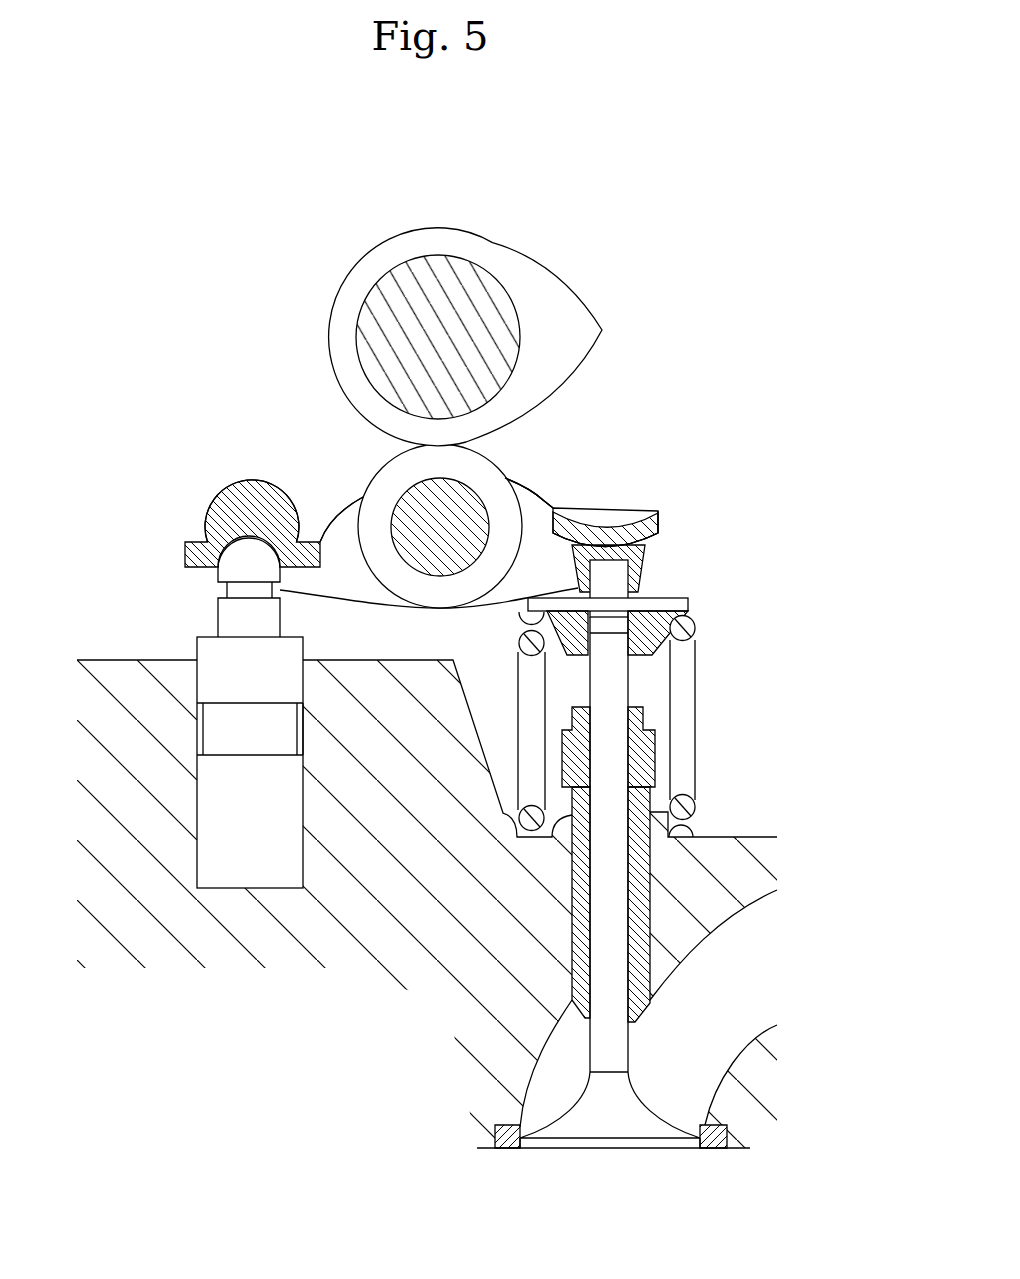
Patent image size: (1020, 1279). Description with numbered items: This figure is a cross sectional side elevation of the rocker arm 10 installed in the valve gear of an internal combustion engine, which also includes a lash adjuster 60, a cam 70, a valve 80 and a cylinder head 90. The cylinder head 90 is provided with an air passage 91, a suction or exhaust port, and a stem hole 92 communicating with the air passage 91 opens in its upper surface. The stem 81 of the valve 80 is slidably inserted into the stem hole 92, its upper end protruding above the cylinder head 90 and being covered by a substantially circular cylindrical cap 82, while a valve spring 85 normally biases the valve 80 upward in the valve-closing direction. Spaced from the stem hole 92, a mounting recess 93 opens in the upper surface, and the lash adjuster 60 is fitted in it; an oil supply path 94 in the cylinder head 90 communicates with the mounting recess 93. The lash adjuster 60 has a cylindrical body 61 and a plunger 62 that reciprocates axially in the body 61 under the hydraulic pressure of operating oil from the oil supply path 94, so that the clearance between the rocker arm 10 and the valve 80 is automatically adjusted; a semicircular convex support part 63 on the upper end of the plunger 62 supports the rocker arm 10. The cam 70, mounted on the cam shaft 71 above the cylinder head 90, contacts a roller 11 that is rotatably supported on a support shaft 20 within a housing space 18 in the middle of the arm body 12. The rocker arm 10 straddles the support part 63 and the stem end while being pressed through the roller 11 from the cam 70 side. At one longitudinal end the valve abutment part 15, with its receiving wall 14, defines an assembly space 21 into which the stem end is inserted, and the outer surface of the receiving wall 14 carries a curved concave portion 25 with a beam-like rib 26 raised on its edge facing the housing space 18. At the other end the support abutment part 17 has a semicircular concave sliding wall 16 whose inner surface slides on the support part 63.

The rocker arm 10 is at (718, 457).
The roller 11 is at (376, 517).
The arm body 12 is at (520, 488).
The receiving wall 14 is at (613, 476).
The valve abutment part 15 is at (655, 512).
The sliding wall 16 is at (238, 517).
The support abutment part 17 is at (228, 520).
The housing space 18 is at (342, 548).
The support shaft 20 is at (417, 497).
The assembly space 21 is at (652, 562).
The concave portion 25 is at (584, 527).
The rib 26 is at (548, 498).
The lash adjuster 60 is at (194, 658).
The body 61 is at (207, 642).
The plunger 62 is at (222, 595).
The support part 63 is at (223, 552).
The cam 70 is at (465, 302).
The cam shaft 71 is at (487, 283).
The valve 80 is at (666, 861).
The stem 81 is at (612, 708).
The cap 82 is at (653, 538).
The valve spring 85 is at (695, 803).
The cylinder head 90 is at (102, 660).
The air passage 91 is at (713, 980).
The stem hole 92 is at (627, 883).
The mounting recess 93 is at (305, 846).
The oil supply path 94 is at (305, 752).